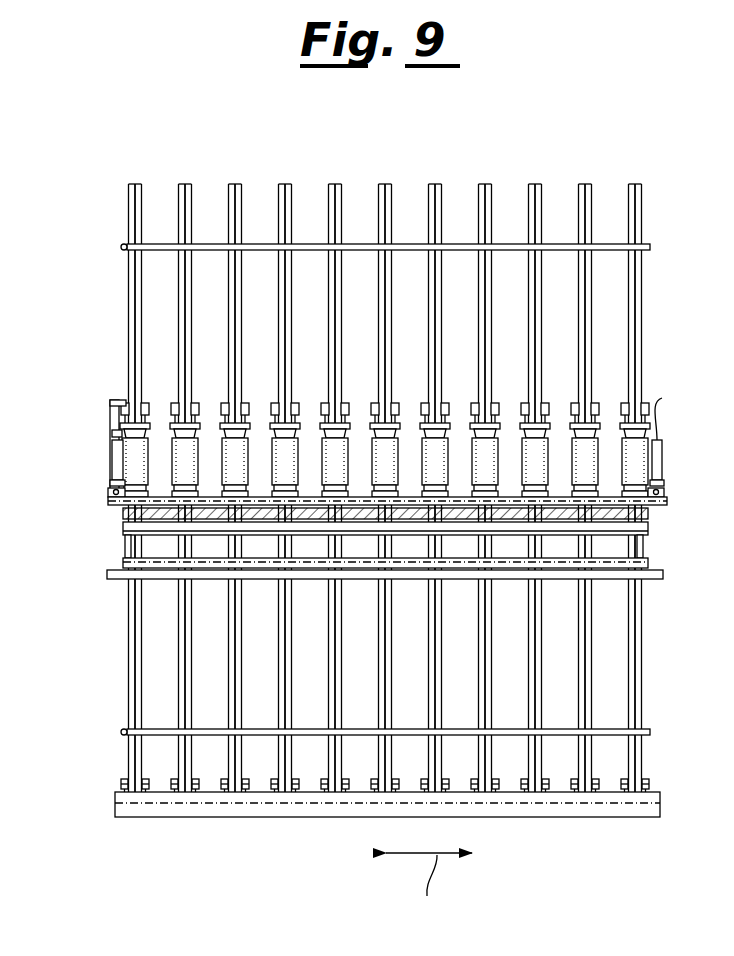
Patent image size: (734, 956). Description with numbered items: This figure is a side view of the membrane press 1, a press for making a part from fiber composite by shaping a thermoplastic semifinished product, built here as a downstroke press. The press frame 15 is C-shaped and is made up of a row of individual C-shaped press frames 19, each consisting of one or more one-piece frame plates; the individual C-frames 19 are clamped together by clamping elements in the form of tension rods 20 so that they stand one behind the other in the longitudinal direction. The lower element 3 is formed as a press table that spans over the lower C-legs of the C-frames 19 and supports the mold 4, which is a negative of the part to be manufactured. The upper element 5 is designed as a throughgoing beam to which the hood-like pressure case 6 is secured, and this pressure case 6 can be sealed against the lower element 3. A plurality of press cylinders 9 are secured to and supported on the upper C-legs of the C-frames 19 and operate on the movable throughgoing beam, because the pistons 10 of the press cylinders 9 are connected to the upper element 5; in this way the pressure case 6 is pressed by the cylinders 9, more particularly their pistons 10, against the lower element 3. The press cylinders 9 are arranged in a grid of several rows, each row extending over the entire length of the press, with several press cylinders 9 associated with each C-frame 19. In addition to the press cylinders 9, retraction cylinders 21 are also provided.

The membrane press 1 is at (566, 135).
The lower element 3 is at (656, 581).
The mold 4 is at (652, 563).
The upper element 5 is at (660, 492).
The pressure case 6 is at (650, 527).
The press cylinder 9 is at (118, 435).
The piston 10 is at (125, 487).
The press frame 15 is at (95, 757).
The C-shaped press frame 19 is at (180, 642).
The tension rod 20 is at (355, 245).
The retraction cylinder 21 is at (115, 447).